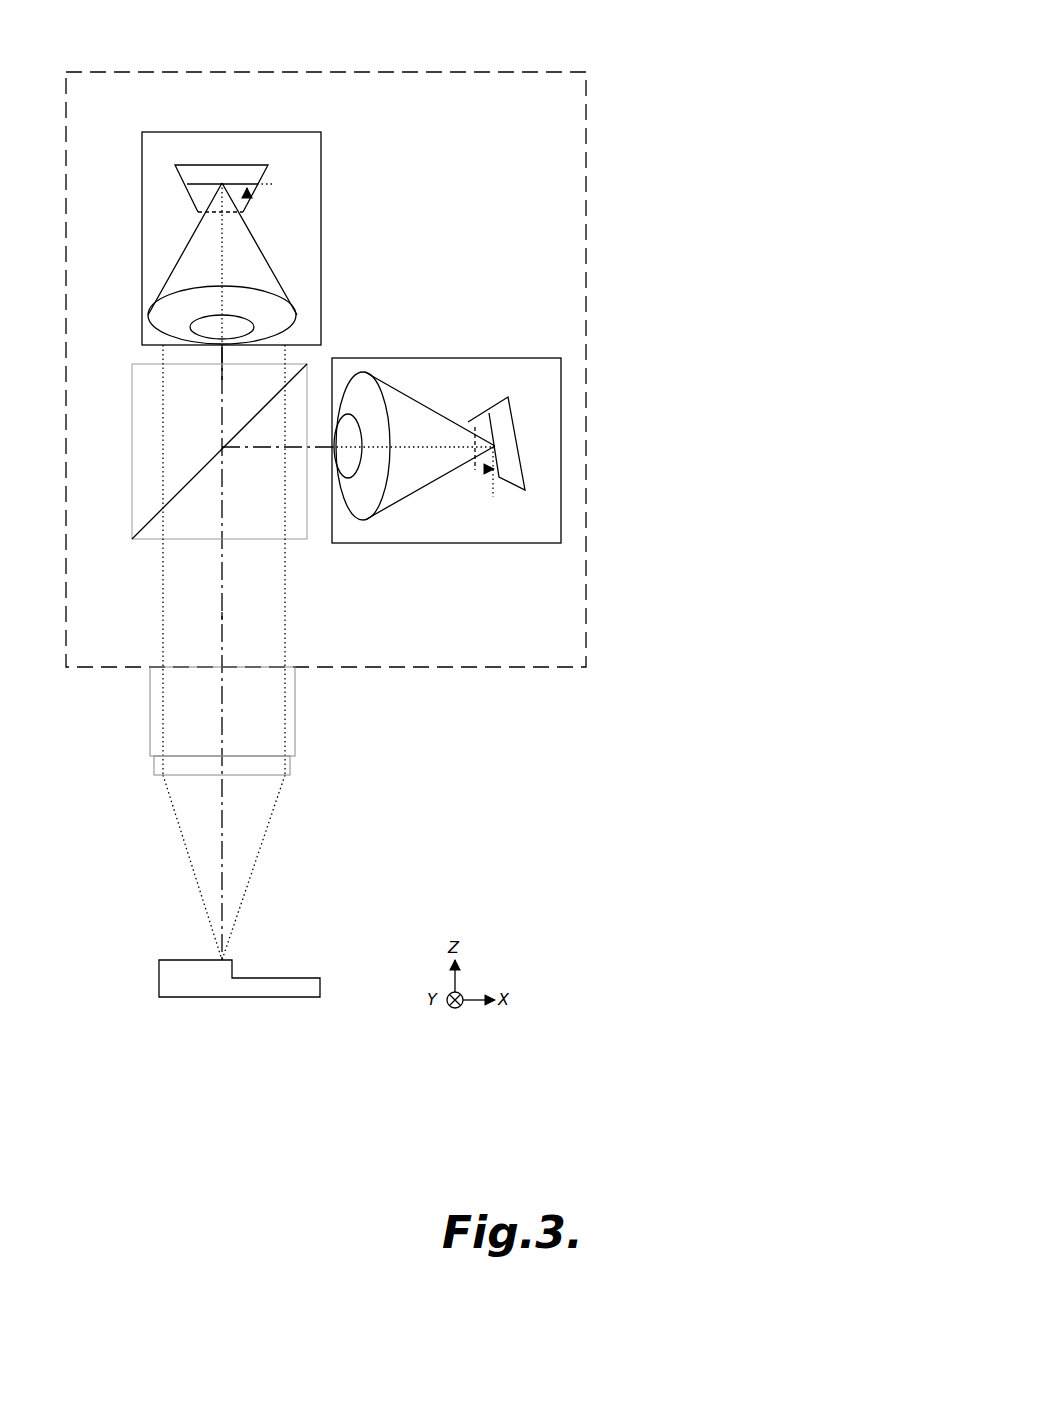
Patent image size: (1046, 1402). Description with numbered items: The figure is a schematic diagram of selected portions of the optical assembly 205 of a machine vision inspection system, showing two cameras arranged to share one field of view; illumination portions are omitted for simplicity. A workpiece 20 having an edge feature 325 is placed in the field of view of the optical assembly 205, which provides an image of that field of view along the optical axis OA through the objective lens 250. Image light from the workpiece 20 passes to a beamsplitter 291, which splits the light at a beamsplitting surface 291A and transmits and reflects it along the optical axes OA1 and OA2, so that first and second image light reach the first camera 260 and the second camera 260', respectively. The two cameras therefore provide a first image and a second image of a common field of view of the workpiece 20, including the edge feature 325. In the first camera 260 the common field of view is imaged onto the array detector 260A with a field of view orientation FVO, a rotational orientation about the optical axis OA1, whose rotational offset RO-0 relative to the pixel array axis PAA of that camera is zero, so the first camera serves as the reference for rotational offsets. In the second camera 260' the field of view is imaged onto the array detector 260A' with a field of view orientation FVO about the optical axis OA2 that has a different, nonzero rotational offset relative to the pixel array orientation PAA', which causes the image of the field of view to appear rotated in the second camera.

The optical assembly 205 is at (586, 192).
The first camera 260 is at (195, 238).
The array detector 260A is at (219, 147).
The pixel array axis PAA is at (253, 143).
The rotational offset RO-0 is at (248, 181).
The field of view orientation FVO is at (265, 185).
The optical axis OA1 is at (222, 377).
The optical axis OA is at (222, 617).
The optical axis OA2 is at (248, 448).
The beamsplitter 291 is at (132, 398).
The beamsplitting surface 291A is at (145, 527).
The second camera 260' is at (446, 474).
The array detector 260A' is at (567, 443).
The pixel array orientation PAA' is at (530, 349).
The objective lens 250 is at (150, 720).
The workpiece 20 is at (320, 985).
The edge feature 325 is at (237, 954).